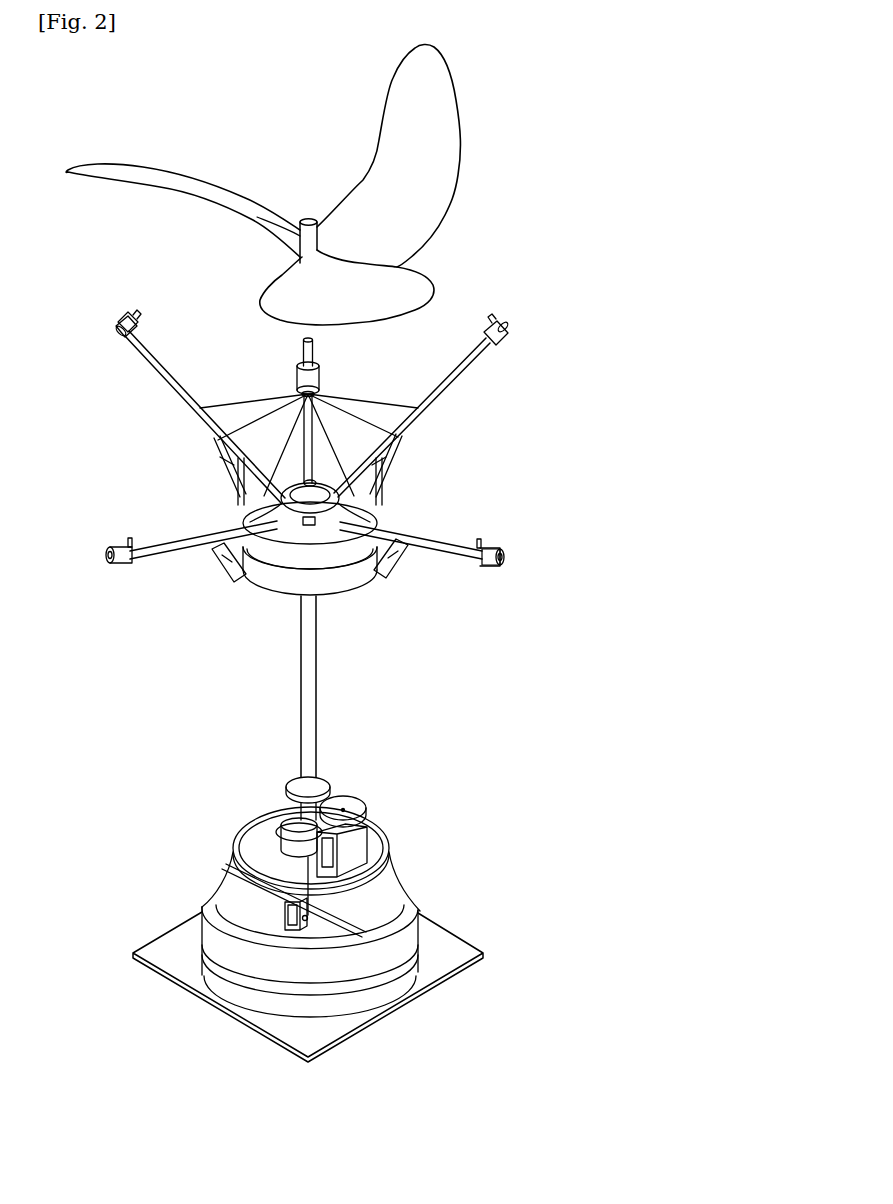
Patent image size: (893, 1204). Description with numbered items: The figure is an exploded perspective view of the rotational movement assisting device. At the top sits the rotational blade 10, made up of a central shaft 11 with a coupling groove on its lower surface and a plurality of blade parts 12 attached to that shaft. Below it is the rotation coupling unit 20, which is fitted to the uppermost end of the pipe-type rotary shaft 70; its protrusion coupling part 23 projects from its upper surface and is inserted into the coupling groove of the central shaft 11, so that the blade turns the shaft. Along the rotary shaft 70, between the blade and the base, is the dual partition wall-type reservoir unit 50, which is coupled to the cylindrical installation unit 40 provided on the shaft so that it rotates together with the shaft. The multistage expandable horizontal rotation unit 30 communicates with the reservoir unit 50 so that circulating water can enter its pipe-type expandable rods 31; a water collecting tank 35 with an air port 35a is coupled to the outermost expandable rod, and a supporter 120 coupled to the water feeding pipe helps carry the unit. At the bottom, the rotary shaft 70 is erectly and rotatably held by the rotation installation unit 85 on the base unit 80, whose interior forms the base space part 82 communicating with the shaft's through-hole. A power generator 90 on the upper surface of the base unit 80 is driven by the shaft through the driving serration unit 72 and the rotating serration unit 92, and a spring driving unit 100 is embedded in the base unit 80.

The rotational blade 10 is at (321, 184).
The central shaft 11 is at (308, 220).
The blade parts 12 is at (160, 182).
The rotation coupling unit 20 is at (311, 360).
The protrusion coupling part 23 is at (303, 348).
The horizontal rotation unit 30 is at (513, 343).
The expandable rod 31 is at (160, 380).
The water collecting tank 35 is at (482, 543).
The air port 35a is at (127, 322).
The cylindrical installation unit 40 is at (277, 493).
The reservoir unit 50 is at (284, 578).
The rotary shaft 70 is at (328, 687).
The driving serration unit 72 is at (287, 788).
The base unit 80 is at (340, 925).
The base space part 82 is at (266, 977).
The rotation installation unit 85 is at (290, 838).
The power generator 90 is at (380, 853).
The rotating serration unit 92 is at (362, 805).
The spring driving unit 100 is at (283, 912).
The supporter 120 is at (228, 570).